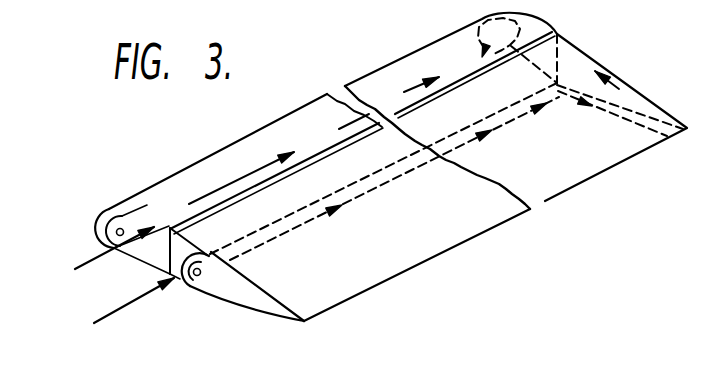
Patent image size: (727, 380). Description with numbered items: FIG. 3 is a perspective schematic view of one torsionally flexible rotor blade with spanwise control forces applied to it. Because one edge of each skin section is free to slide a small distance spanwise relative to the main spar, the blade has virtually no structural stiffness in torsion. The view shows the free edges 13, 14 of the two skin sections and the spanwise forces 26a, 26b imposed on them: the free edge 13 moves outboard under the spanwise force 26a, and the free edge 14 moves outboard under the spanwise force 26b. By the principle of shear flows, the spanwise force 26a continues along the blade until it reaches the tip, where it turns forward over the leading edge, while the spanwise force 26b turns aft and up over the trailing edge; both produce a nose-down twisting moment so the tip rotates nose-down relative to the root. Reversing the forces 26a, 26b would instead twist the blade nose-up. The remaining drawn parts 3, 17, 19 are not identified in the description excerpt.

The folding device housing 3 is at (162, 266).
The free edge 13 is at (159, 215).
The free edge 14 is at (168, 273).
The roller of upper belt 17 is at (90, 202).
The roller of lower belt 19 is at (201, 266).
The spanwise force 26a is at (82, 252).
The spanwise force 26b is at (102, 308).